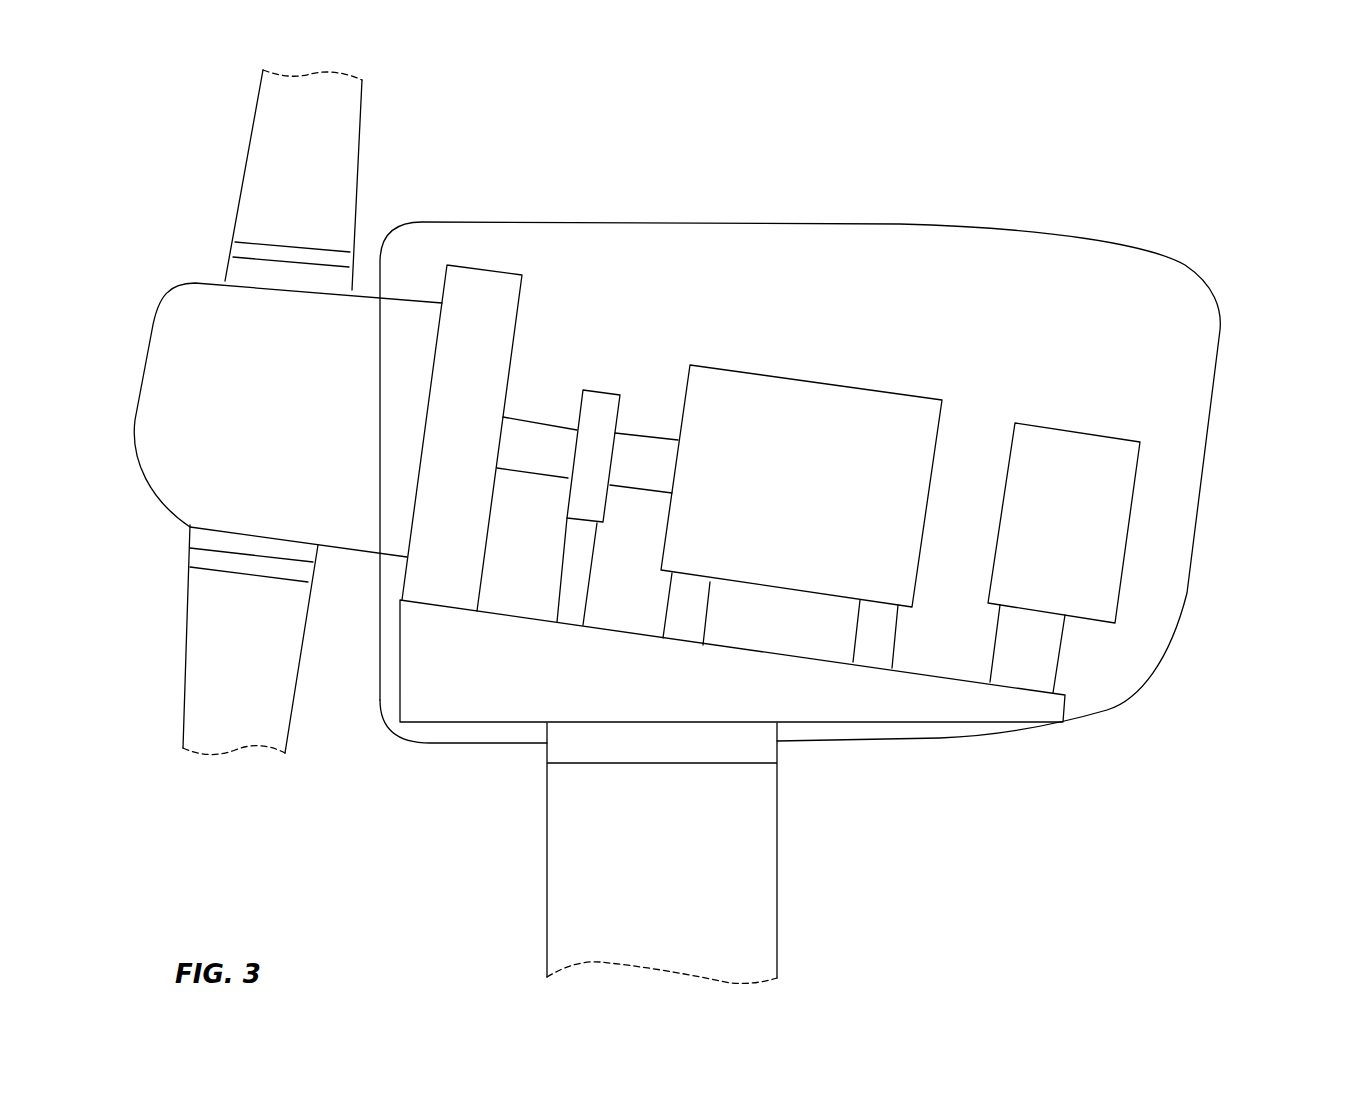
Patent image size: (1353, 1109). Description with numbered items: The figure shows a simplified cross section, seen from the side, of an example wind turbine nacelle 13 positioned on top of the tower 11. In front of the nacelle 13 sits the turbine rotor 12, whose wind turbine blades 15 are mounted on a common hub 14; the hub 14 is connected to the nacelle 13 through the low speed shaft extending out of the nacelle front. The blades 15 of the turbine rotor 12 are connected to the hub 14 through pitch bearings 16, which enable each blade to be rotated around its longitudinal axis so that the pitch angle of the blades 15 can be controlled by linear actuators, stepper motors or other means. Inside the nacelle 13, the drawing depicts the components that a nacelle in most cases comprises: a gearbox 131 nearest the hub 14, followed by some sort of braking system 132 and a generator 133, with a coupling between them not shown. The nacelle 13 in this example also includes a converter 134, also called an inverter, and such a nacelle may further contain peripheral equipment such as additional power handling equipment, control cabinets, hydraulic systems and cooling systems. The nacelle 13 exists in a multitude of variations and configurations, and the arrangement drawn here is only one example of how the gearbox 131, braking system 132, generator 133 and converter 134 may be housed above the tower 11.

The tower 11 is at (745, 933).
The turbine rotor 12 is at (155, 537).
The wind turbine nacelle 13 is at (1254, 259).
The hub 14 is at (238, 382).
The wind turbine blades 15 is at (322, 168).
The pitch bearings 16 is at (223, 563).
The gearbox 131 is at (483, 303).
The braking system 132 is at (602, 413).
The generator 133 is at (763, 428).
The converter 134 is at (1083, 483).